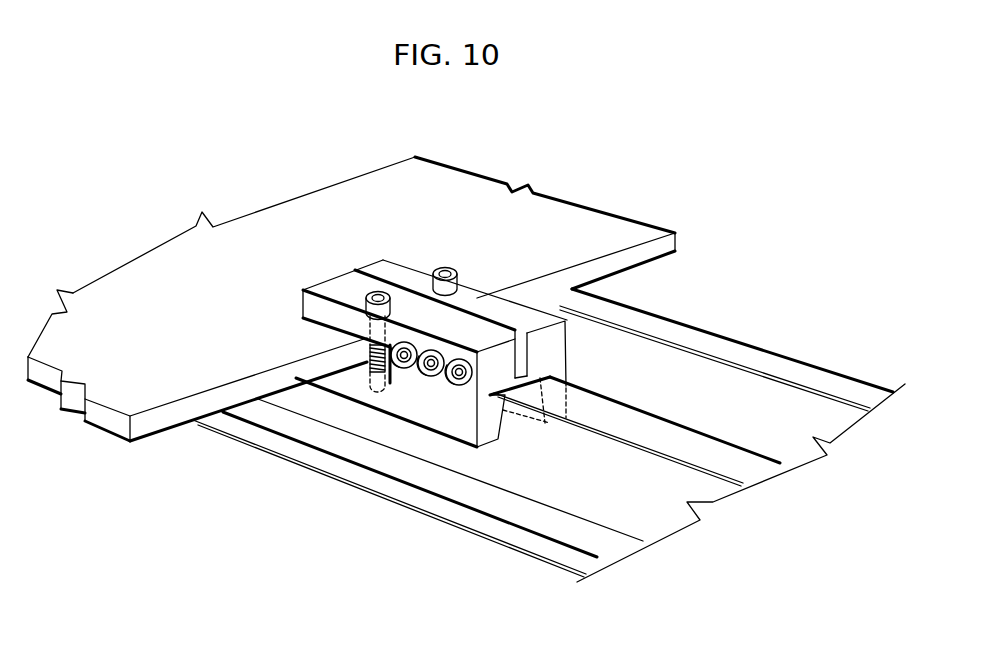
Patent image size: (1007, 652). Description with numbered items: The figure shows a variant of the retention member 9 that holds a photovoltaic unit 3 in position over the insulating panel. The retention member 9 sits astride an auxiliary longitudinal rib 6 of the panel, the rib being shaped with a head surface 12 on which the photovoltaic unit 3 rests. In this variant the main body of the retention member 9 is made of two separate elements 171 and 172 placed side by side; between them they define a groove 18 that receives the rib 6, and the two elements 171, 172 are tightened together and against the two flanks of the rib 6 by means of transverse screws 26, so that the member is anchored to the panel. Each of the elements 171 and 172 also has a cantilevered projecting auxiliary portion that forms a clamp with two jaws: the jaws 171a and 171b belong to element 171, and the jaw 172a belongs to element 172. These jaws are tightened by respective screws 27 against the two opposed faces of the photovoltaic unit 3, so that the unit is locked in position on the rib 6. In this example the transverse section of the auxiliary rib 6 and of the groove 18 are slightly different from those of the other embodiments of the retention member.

The photovoltaic unit 3 is at (132, 392).
The auxiliary longitudinal rib 6 is at (765, 348).
The retention member 9 is at (426, 391).
The head surface 12 is at (717, 455).
The groove 18 is at (490, 428).
The transverse screws 26 is at (455, 385).
The screws 27 is at (367, 347).
The element 171 is at (384, 415).
The jaw 171a is at (333, 384).
The jaw 171b is at (313, 305).
The element 172 is at (512, 302).
The jaw 172a is at (386, 261).